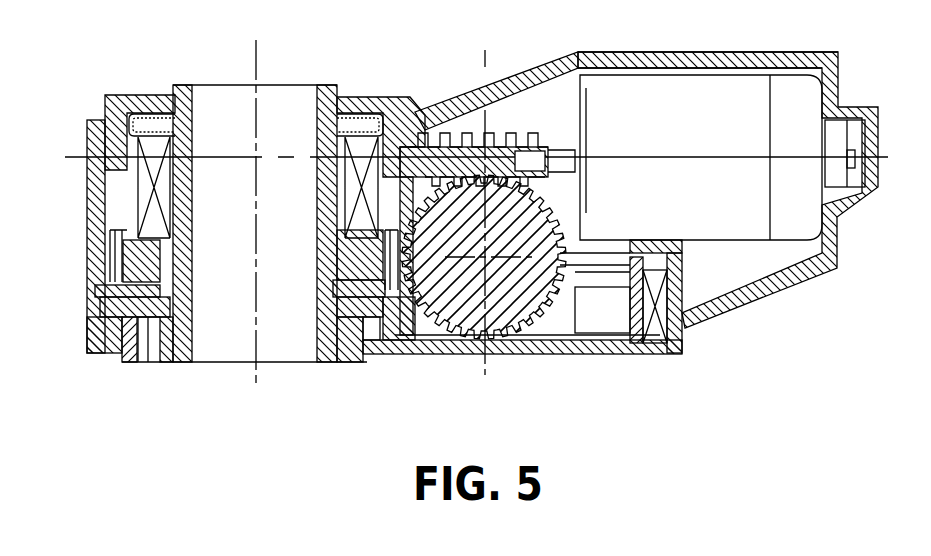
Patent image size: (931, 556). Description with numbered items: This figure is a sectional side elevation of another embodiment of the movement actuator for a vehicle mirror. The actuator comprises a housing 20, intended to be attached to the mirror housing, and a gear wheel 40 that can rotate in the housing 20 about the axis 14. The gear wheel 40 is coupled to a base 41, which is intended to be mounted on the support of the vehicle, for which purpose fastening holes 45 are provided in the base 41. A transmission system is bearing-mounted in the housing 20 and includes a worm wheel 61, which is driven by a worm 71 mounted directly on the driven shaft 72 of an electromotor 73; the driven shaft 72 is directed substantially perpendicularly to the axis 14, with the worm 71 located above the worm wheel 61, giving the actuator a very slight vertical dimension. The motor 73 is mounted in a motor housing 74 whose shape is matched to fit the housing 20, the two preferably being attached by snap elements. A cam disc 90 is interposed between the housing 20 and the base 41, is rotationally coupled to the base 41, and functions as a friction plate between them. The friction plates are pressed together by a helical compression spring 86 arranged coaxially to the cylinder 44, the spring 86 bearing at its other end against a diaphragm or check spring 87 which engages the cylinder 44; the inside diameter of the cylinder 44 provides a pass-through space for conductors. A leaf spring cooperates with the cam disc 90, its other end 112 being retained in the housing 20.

The axis 14 is at (261, 60).
The housing 20 is at (92, 222).
The gear wheel 40 is at (120, 262).
The base 41 is at (335, 365).
The cylinder 44 is at (328, 84).
The fastening holes 45 is at (157, 365).
The worm wheel 61 is at (545, 353).
The worm 71 is at (467, 133).
The driven shaft 72 is at (535, 133).
The electromotor 73 is at (642, 73).
The motor housing 74 is at (718, 53).
The compression spring 86 is at (125, 125).
The check spring 87 is at (144, 112).
The cam disc 90 is at (110, 355).
The other end of leaf spring 112 is at (647, 353).